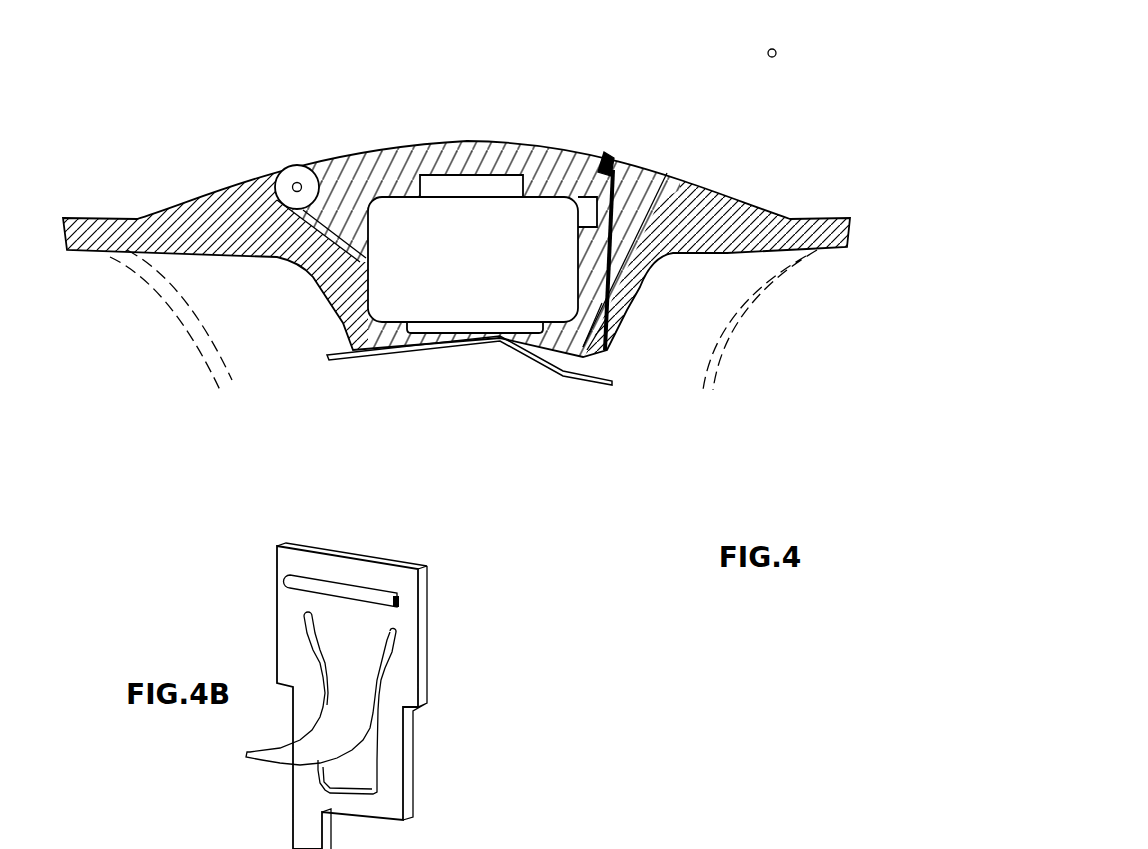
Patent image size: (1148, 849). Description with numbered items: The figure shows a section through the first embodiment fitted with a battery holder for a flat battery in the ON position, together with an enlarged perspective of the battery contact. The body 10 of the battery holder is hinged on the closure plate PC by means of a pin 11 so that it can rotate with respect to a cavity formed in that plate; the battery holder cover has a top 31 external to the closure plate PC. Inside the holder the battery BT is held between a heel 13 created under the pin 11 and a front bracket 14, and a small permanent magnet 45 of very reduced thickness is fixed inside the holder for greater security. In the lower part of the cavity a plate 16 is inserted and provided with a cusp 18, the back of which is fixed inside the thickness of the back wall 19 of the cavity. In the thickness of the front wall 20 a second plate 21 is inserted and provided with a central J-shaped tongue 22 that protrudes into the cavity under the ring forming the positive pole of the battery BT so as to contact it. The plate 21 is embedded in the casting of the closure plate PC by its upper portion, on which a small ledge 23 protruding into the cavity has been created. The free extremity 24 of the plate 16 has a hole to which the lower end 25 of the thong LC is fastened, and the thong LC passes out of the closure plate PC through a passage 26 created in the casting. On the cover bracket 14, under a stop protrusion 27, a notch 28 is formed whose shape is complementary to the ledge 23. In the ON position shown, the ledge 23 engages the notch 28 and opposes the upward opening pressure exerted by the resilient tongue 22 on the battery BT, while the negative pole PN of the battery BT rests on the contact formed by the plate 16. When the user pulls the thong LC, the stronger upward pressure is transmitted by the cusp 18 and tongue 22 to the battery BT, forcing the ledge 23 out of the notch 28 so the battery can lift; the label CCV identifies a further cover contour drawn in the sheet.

In FIG. 4, the body of the battery holder 10 is at (347, 165).
In FIG. 4, the pin 11 is at (292, 172).
In FIG. 4, the heel 13 is at (283, 250).
In FIG. 4, the front bracket 14 is at (597, 195).
In FIG. 4, the plate 16 is at (390, 355).
In FIG. 4, the cusp 18 is at (495, 343).
In FIG. 4, the back wall 19 is at (328, 360).
In FIG. 4, the front wall 20 is at (663, 167).
In FIG. 4, the second plate 21 is at (630, 170).
In FIG. 4B, the second plate 21 is at (427, 652).
In FIG. 4, the J-shaped tongue 22 is at (600, 307).
In FIG. 4B, the J-shaped tongue 22 is at (340, 755).
In FIG. 4, the ledge 23 is at (610, 158).
In FIG. 4B, the ledge 23 is at (377, 598).
In FIG. 4, the free extremity 24 is at (612, 384).
In FIG. 4, the lower end 25 is at (567, 373).
In FIG. 4, the passage 26 is at (653, 198).
In FIG. 4, the stop protrusion 27 is at (605, 157).
In FIG. 4, the notch 28 is at (593, 157).
In FIG. 4, the top 31 is at (443, 143).
In FIG. 4, the permanent magnet 45 is at (467, 187).
In FIG. 4, the battery BT is at (413, 237).
In FIG. 4, the closure plate PC is at (160, 207).
In FIG. 4, the negative pole PN is at (447, 327).
In FIG. 4, the thong LC is at (769, 57).
In FIG. 4, the cover curve CCV is at (763, 303).